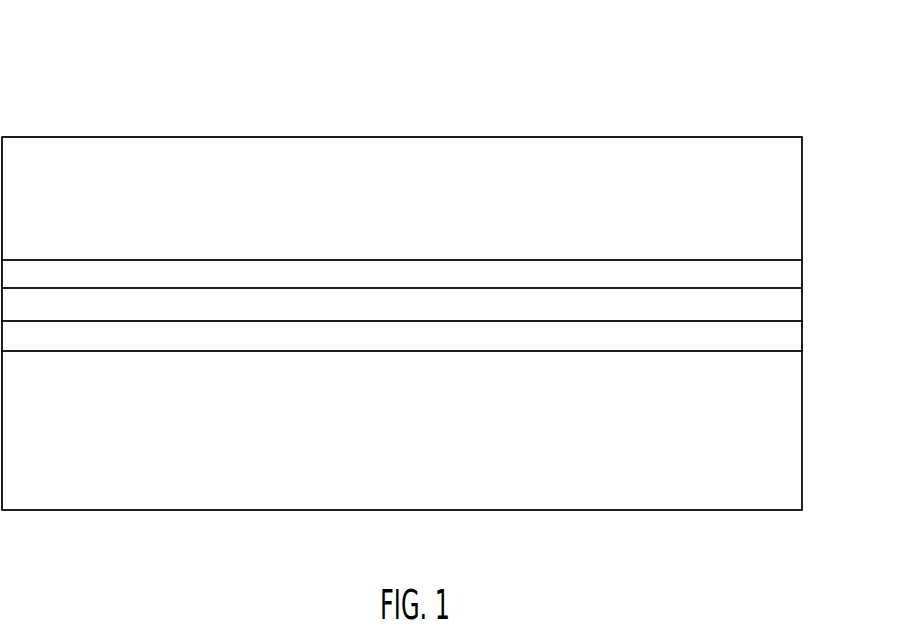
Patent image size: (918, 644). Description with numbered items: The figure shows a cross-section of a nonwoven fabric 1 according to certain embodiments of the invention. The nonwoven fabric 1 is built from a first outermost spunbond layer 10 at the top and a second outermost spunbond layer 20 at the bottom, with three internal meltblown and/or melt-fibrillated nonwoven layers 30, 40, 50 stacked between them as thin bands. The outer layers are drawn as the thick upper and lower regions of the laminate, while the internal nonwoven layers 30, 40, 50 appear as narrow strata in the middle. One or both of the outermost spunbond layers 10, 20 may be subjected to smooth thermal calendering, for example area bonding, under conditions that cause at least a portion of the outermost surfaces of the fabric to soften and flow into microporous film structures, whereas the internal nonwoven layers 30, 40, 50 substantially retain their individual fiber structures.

The nonwoven fabric 1 is at (104, 71).
The first outermost spunbond layer 10 is at (573, 146).
The second outermost spunbond layer 20 is at (662, 503).
The internal meltblown and/or melt-fibrillated nonwoven layer 30 is at (799, 271).
The internal meltblown and/or melt-fibrillated nonwoven layer 40 is at (795, 309).
The internal meltblown and/or melt-fibrillated nonwoven layer 50 is at (795, 337).